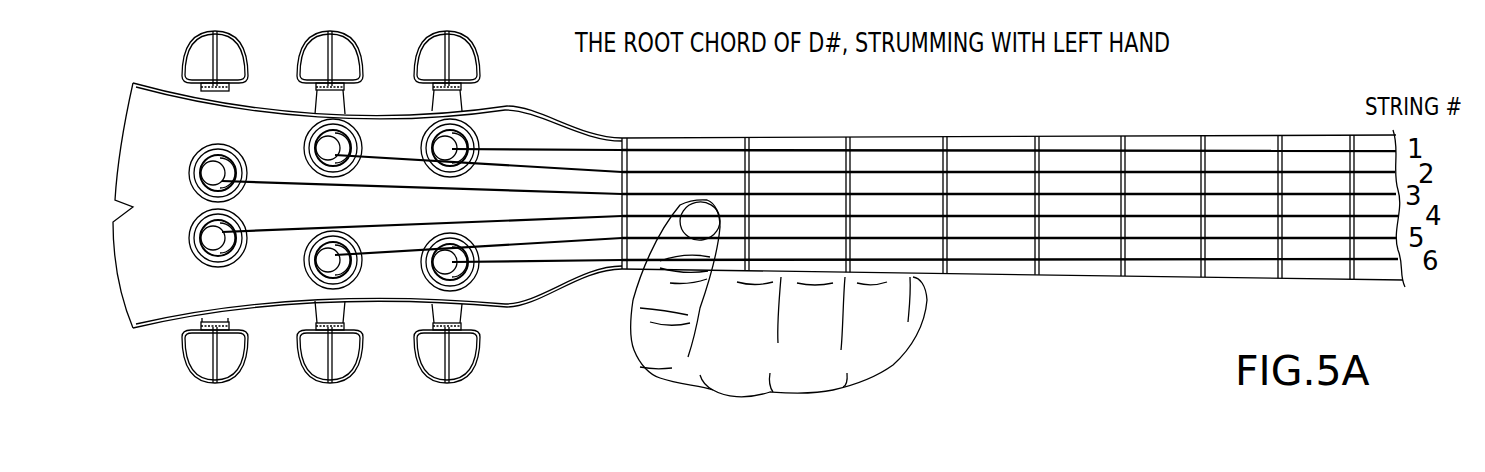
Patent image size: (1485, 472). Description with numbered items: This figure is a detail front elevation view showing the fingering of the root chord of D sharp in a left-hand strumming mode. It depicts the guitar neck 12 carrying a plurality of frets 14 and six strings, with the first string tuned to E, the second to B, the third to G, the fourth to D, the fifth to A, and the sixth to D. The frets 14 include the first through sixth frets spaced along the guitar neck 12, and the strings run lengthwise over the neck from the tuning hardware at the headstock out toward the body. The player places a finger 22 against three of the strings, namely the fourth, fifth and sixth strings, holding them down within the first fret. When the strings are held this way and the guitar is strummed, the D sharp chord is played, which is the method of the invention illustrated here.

The guitar neck 12 is at (1163, 137).
The frets 14 is at (848, 185).
The finger 22 is at (665, 203).